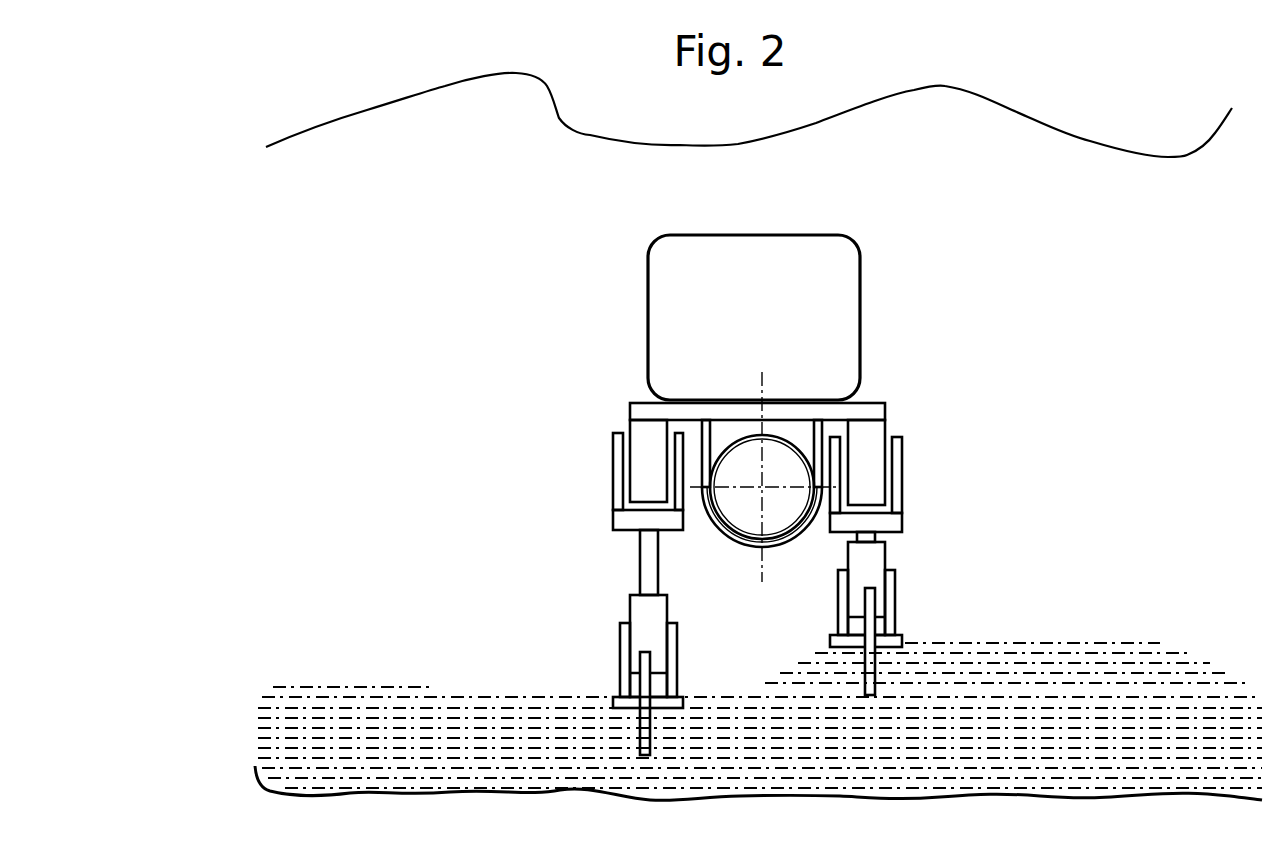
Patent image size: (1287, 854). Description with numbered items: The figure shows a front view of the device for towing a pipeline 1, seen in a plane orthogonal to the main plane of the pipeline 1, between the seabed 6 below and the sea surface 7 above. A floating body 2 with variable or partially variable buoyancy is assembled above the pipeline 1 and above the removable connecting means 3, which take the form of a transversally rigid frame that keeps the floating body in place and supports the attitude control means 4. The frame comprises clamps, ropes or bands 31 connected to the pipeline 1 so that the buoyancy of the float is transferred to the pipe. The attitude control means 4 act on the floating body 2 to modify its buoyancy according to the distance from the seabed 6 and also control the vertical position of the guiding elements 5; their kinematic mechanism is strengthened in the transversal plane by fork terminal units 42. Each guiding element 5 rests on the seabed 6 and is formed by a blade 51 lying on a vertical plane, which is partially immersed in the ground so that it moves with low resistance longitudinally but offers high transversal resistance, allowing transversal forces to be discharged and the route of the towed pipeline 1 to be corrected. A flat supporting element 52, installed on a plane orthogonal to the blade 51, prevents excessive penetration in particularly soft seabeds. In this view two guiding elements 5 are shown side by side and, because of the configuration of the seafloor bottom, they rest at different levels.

The pipeline 1 is at (781, 511).
The floating body 2 is at (827, 261).
The removable connecting means 3 is at (862, 410).
The clamps, ropes or bands 31 is at (745, 550).
The attitude control means 4 is at (830, 446).
The fork terminal units 42 is at (844, 449).
The guiding element 5 is at (734, 642).
The blade 51 is at (647, 667).
The flat supporting element 52 is at (612, 696).
The seabed 6 is at (334, 671).
The sea surface 7 is at (553, 111).